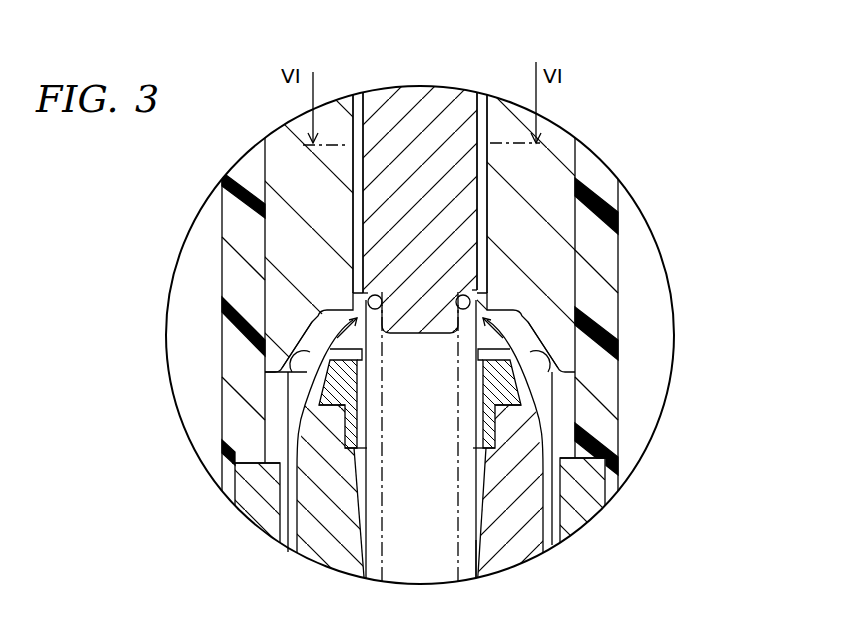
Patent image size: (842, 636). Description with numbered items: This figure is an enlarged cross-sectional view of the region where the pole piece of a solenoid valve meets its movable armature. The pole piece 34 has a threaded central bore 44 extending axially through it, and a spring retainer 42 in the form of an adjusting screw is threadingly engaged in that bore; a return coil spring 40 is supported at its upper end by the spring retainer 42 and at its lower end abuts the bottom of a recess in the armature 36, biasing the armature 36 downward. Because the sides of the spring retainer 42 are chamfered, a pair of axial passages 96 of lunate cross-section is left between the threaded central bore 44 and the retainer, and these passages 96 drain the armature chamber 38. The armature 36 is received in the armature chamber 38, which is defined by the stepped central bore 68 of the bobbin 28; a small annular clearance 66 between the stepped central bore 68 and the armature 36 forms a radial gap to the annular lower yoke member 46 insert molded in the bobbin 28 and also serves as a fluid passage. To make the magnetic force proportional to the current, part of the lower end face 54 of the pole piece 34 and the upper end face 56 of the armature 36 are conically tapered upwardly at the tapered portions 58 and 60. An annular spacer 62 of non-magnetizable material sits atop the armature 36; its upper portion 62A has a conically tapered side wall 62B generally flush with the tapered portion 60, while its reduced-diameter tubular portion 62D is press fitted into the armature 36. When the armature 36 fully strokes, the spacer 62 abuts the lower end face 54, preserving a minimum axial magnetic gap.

The bobbin 28 is at (605, 257).
The pole piece 34 is at (543, 162).
The armature 36 is at (512, 552).
The armature chamber 38 is at (437, 480).
The return coil spring 40 is at (462, 565).
The spring retainer 42 is at (443, 88).
The threaded central bore 44 is at (356, 124).
The lower yoke member 46 is at (250, 505).
The lower end face 54 is at (530, 320).
The upper end face 56 is at (548, 417).
The tapered end face portion 58 is at (305, 385).
The tapered end face portion 60 is at (292, 427).
The annular spacer 62 is at (340, 375).
The upper portion 62A is at (515, 395).
The conically tapered side wall 62B is at (522, 364).
The reduced-diameter tubular portion 62D is at (495, 433).
The annular clearance 66 is at (545, 537).
The stepped central bore 68 is at (280, 545).
The axial passages 96 is at (484, 114).